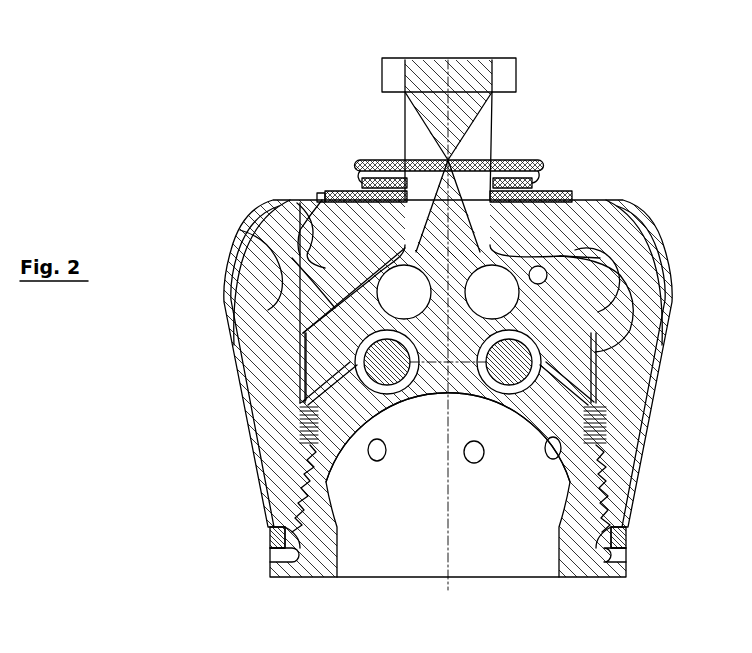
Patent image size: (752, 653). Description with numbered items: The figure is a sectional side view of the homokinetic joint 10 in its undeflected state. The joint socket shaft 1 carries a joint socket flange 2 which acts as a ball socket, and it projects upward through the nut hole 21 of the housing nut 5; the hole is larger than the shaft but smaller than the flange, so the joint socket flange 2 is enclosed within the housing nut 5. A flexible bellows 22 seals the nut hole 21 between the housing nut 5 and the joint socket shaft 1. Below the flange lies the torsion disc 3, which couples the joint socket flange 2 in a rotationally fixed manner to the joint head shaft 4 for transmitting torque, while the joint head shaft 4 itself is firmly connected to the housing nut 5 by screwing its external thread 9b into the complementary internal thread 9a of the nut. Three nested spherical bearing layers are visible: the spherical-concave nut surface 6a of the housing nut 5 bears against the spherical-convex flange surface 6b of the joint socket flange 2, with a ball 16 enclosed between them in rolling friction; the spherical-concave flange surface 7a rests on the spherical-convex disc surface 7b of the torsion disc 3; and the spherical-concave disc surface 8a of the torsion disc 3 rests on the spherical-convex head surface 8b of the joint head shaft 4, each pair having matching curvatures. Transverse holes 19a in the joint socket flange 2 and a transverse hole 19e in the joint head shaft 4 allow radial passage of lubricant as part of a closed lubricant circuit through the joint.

The homokinetic joint 10 is at (224, 27).
The joint socket shaft 1 is at (406, 130).
The sealing gasket 22 is at (520, 165).
The nut hole 21 is at (372, 203).
The spherical-concave nut surface 6a is at (316, 200).
The spherical-convex flange surface 6b is at (288, 201).
The spherical-concave flange surface 7a is at (240, 230).
The spherical-convex disc surface 7b is at (326, 320).
The housing nut 5 is at (652, 228).
The joint socket flange 2 is at (583, 287).
The torsion disc 3 is at (573, 346).
The ball 16 is at (374, 367).
The transverse hole 19a is at (540, 272).
The transverse hole 19e is at (474, 463).
The spherical-concave disc surface 8a is at (328, 398).
The spherical-convex head surface 8b is at (292, 406).
The internal thread 9a is at (616, 424).
The external thread 9b is at (596, 508).
The joint head shaft 4 is at (318, 560).